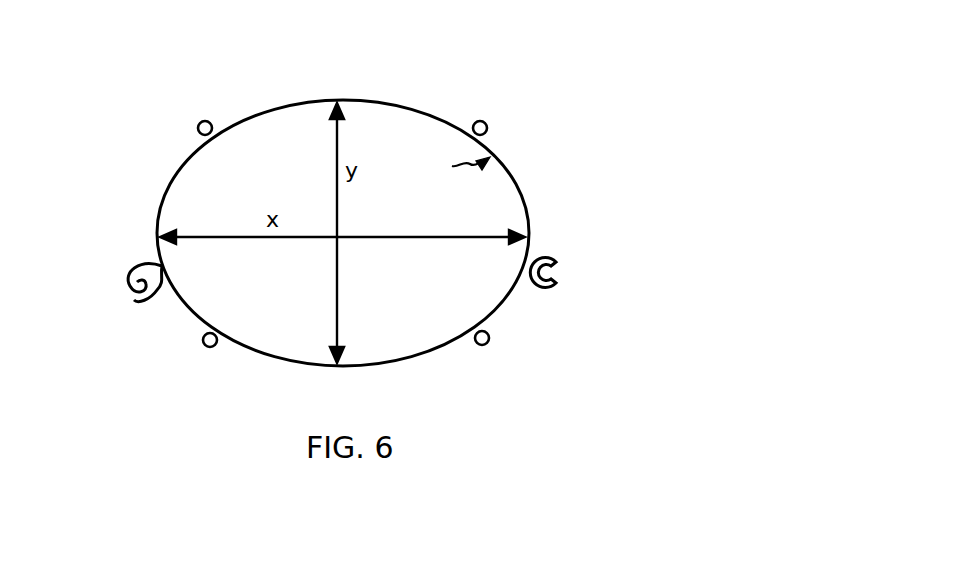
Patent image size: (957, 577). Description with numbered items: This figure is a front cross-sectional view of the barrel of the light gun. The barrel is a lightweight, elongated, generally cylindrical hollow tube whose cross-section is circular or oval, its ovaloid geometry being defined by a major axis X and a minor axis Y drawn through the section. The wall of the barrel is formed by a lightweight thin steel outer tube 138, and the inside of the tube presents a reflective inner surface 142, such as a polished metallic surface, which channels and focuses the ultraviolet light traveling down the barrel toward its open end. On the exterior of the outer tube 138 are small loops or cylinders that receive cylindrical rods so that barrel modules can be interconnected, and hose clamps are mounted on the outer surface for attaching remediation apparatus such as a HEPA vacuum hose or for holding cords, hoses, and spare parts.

The outer tube 138 is at (518, 183).
The reflective inner surface 142 is at (458, 168).